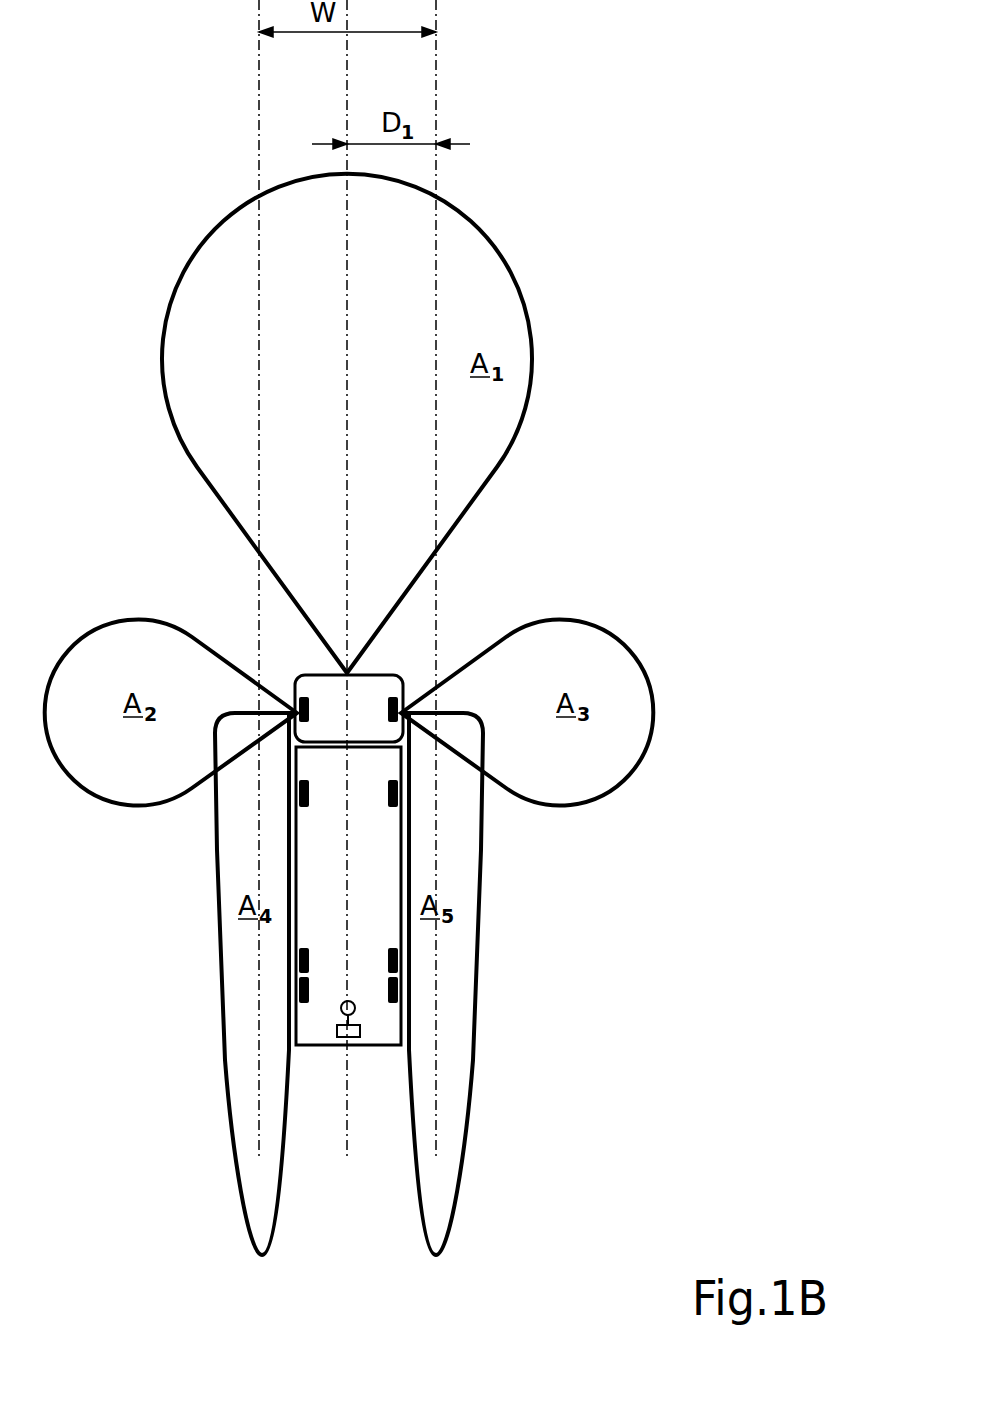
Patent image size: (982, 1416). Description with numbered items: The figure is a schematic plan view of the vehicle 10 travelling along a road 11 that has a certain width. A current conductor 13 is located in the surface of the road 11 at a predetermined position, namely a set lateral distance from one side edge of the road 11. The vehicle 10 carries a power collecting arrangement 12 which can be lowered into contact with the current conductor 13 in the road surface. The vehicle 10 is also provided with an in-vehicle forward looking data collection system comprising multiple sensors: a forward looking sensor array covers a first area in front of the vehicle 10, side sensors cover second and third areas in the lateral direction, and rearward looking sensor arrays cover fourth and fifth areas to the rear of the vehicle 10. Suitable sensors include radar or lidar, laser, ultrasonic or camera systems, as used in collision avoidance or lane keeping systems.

The vehicle 10 is at (317, 873).
The road 11 is at (257, 318).
The power collecting arrangement 12 is at (363, 1015).
The current conductor 13 is at (347, 1092).